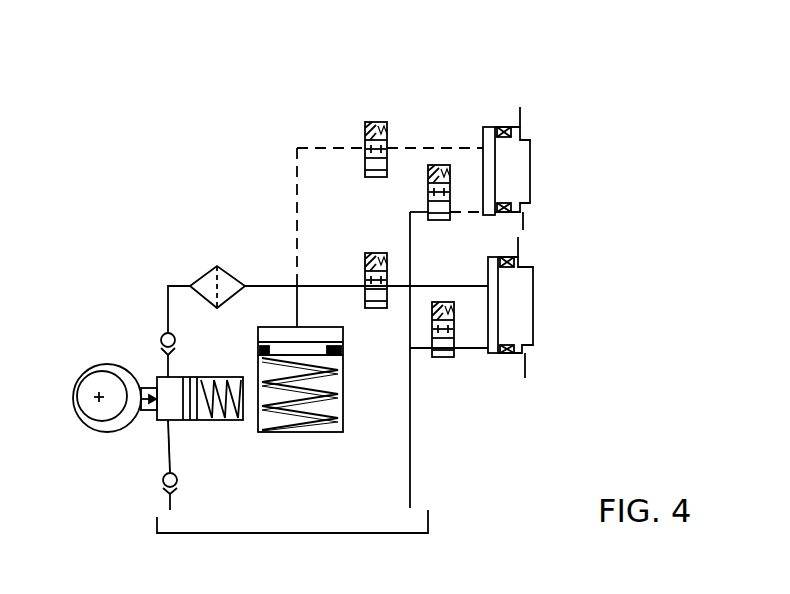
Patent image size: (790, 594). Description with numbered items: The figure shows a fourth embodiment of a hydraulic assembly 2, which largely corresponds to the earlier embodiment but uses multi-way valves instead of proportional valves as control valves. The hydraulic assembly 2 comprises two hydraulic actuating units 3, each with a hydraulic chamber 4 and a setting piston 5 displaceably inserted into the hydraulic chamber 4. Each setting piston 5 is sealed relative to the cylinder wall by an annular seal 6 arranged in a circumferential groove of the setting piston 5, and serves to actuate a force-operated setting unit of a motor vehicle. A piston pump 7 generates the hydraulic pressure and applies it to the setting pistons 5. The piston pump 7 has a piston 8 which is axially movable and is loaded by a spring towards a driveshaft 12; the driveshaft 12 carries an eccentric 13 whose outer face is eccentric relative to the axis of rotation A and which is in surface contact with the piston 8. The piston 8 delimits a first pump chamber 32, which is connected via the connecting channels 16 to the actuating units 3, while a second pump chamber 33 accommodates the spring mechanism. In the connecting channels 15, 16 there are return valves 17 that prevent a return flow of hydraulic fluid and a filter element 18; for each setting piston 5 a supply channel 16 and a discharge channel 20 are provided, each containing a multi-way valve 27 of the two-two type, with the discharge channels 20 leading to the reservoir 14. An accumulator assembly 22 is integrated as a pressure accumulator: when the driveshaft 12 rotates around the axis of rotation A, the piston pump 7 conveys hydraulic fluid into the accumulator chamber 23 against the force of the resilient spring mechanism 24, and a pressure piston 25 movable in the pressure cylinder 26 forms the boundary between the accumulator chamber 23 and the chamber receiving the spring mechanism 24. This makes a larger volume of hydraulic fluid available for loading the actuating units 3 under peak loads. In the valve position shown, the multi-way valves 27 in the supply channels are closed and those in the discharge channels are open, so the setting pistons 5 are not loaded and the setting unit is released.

The hydraulic assembly 2 is at (203, 138).
The hydraulic actuating unit 3 is at (556, 136).
The hydraulic chamber 4 is at (484, 136).
The setting piston 5 is at (522, 177).
The annular seal 6 is at (520, 213).
The piston pump 7 is at (237, 437).
The piston 8 is at (153, 412).
The driveshaft 12 is at (99, 396).
The eccentric 13 is at (118, 368).
The reservoir 14 is at (289, 531).
The connecting channel 15 is at (172, 448).
The connecting channel 16 is at (327, 145).
The return valve 17 is at (176, 342).
The filter element 18 is at (207, 272).
The return flow channel 20 is at (410, 252).
The accumulator assembly 22 is at (350, 386).
The accumulator chamber 23 is at (323, 335).
The spring mechanism 24 is at (330, 417).
The pressure piston 25 is at (341, 344).
The pressure cylinder 26 is at (338, 433).
The multi-way valve 27 is at (386, 136).
The first pump chamber 32 is at (159, 424).
The second pump chamber 33 is at (230, 376).
The axis of rotation A is at (97, 393).